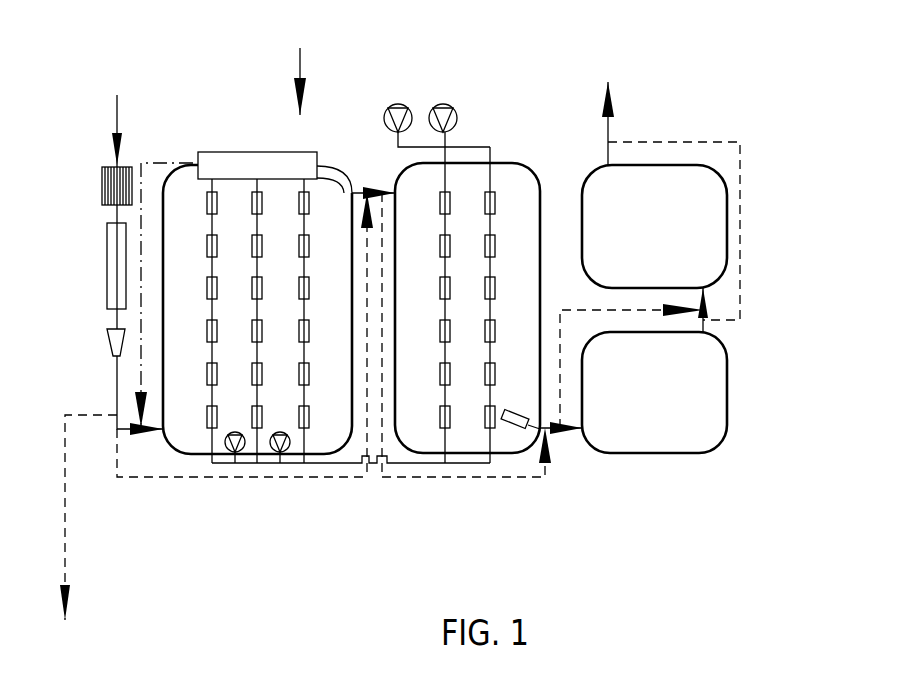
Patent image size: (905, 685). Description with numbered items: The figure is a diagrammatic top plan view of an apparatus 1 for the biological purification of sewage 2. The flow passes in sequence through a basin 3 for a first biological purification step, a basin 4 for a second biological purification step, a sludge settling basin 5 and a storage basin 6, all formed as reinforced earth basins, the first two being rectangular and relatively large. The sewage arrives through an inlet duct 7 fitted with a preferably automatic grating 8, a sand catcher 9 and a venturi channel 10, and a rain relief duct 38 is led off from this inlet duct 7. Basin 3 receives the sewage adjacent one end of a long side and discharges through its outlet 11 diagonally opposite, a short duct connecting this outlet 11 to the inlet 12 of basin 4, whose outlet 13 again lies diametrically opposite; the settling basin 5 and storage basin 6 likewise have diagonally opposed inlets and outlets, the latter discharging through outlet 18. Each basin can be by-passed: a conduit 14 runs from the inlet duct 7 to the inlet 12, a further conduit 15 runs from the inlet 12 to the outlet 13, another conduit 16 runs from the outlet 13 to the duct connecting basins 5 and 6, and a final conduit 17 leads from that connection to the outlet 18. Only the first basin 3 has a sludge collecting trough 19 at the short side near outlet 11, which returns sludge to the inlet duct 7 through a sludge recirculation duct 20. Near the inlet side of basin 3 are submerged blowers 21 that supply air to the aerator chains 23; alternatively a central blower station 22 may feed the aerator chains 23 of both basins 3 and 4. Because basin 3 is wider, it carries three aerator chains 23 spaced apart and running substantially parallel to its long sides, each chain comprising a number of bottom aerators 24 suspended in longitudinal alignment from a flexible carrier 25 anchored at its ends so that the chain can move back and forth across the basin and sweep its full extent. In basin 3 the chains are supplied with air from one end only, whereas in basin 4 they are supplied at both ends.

The apparatus 1 is at (299, 64).
The sewage 2 is at (177, 255).
The basin 3 is at (193, 423).
The basin 4 is at (503, 183).
The sludge settling basin 5 is at (695, 400).
The storage basin 6 is at (700, 225).
The inlet duct 7 is at (115, 400).
The grating 8 is at (102, 185).
The sand catcher 9 is at (113, 272).
The venturi channel 10 is at (108, 338).
The outlet 11 is at (359, 192).
The inlet 12 is at (369, 190).
The outlet 13 is at (553, 435).
The conduit 14 is at (340, 478).
The conduit 15 is at (522, 480).
The conduit 16 is at (563, 305).
The conduit 17 is at (740, 236).
The outlet 18 is at (605, 131).
The sludge collecting trough 19 is at (270, 150).
The sludge recirculation duct 20 is at (138, 252).
The submerged blowers 21 is at (278, 452).
The central blower station 22 is at (452, 110).
The aerator chains 23 is at (305, 370).
The bottom aerators 24 is at (305, 290).
The flexible carrier 25 is at (257, 272).
The rain relief duct 38 is at (66, 526).